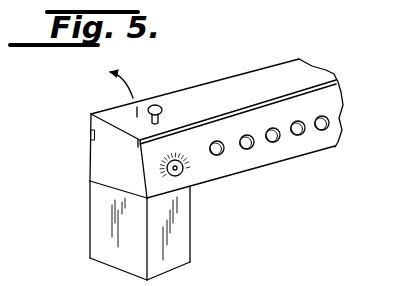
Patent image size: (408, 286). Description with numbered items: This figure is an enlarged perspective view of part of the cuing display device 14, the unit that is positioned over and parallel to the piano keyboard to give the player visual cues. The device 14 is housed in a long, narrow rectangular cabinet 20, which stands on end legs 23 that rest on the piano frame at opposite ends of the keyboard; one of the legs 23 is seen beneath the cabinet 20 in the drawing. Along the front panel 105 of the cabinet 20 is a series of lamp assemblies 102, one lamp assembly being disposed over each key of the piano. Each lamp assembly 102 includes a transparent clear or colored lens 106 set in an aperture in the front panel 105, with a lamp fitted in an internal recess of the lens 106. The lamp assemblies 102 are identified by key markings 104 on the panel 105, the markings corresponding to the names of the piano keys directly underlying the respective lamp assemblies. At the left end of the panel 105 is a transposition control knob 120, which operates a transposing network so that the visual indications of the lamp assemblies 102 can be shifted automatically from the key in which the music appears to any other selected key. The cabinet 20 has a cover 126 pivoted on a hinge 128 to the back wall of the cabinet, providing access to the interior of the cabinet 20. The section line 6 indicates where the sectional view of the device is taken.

The section line 6- 6 is at (153, 79).
The cuing display device 14 is at (232, 76).
The cabinet 20 is at (112, 162).
The end legs 23 is at (115, 238).
The lamp assembly 102 is at (249, 157).
The key markings 104 is at (322, 85).
The front panel 105 is at (279, 152).
The lens 106 is at (322, 124).
The transposition control knob 120 is at (192, 172).
The cover 126 is at (250, 86).
The hinge 128 is at (91, 136).